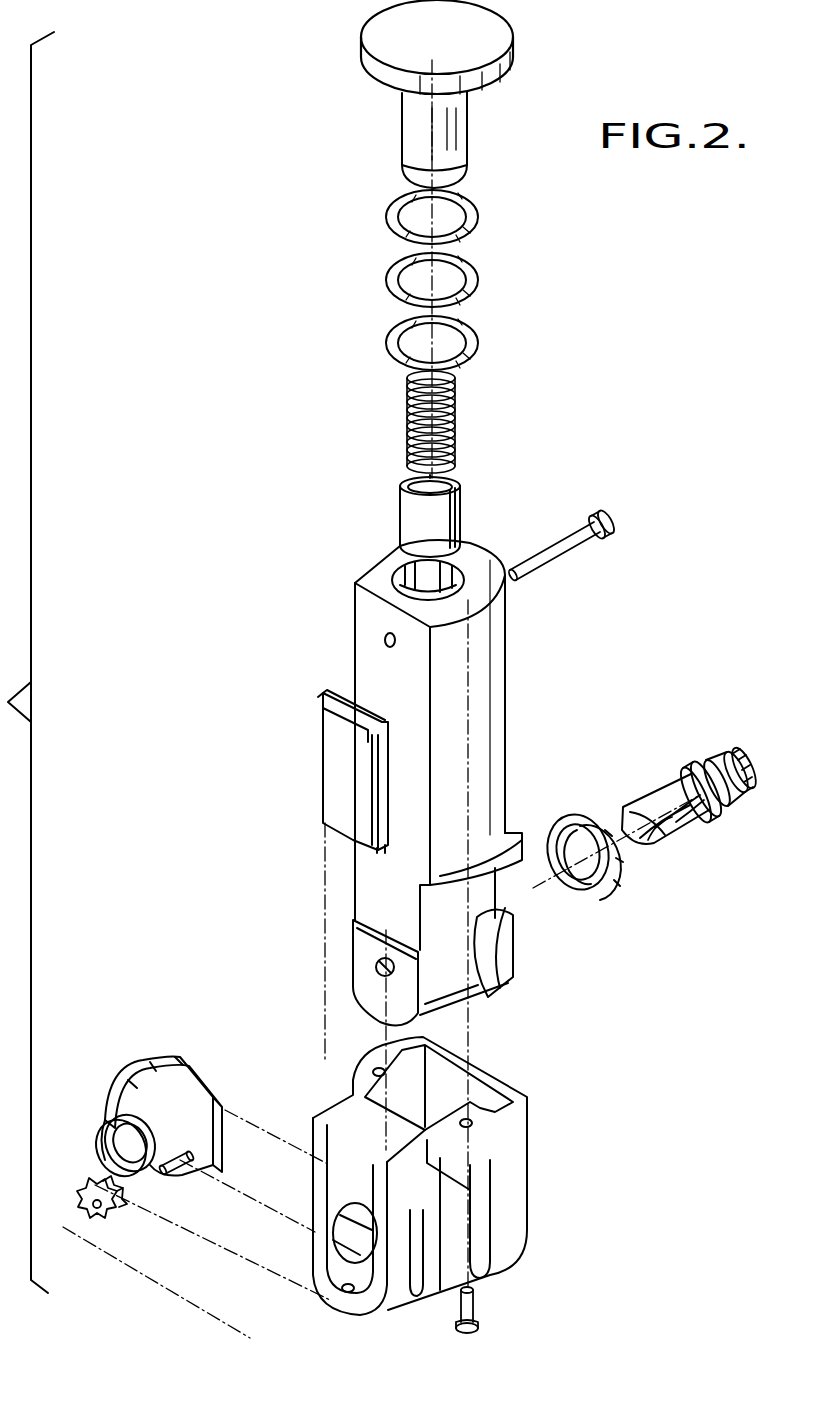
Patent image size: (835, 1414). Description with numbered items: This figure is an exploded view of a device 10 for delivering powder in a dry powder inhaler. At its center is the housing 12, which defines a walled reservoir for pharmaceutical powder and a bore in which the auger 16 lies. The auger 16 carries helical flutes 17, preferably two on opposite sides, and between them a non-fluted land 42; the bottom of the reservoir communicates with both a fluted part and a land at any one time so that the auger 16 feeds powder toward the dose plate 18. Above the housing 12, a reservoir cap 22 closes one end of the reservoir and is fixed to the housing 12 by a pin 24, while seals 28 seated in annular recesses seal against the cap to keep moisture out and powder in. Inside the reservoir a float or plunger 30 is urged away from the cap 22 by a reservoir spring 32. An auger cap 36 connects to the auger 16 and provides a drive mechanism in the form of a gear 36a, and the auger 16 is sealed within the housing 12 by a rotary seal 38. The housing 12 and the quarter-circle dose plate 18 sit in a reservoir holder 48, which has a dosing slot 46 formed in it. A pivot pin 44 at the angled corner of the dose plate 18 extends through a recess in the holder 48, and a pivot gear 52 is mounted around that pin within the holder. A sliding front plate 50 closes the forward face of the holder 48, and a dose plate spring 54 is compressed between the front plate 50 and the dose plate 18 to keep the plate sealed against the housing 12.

The device 10 is at (245, 691).
The housing 12 is at (352, 632).
The auger 16 is at (632, 776).
The flutes 17 is at (678, 820).
The dose plate 18 is at (180, 1062).
The reservoir cap 22 is at (358, 72).
The pin 24 is at (600, 515).
The seals 28 is at (392, 283).
The reservoir float or plunger 30 is at (407, 515).
The reservoir spring 32 is at (408, 420).
The auger cap 36 is at (704, 765).
The gear 36a is at (737, 760).
The rotary seal 38 is at (583, 895).
The land 42 is at (660, 845).
The pivot pin 44 is at (178, 1170).
The dosing slot 46 is at (440, 1265).
The reservoir holder 48 is at (313, 1280).
The sliding front plate 50 is at (323, 768).
The pivot gear 52 is at (90, 1185).
The dose plate spring 54 is at (130, 1100).